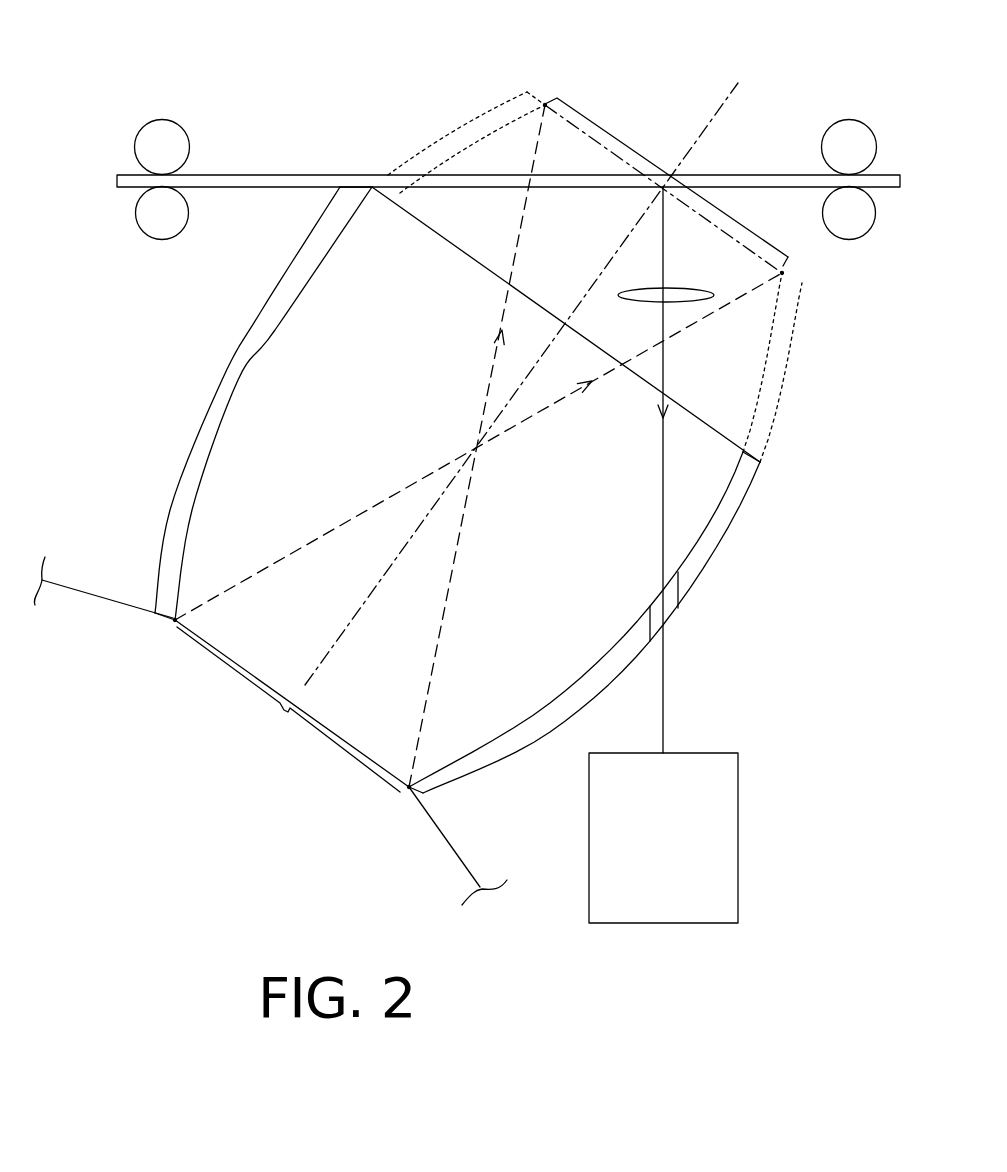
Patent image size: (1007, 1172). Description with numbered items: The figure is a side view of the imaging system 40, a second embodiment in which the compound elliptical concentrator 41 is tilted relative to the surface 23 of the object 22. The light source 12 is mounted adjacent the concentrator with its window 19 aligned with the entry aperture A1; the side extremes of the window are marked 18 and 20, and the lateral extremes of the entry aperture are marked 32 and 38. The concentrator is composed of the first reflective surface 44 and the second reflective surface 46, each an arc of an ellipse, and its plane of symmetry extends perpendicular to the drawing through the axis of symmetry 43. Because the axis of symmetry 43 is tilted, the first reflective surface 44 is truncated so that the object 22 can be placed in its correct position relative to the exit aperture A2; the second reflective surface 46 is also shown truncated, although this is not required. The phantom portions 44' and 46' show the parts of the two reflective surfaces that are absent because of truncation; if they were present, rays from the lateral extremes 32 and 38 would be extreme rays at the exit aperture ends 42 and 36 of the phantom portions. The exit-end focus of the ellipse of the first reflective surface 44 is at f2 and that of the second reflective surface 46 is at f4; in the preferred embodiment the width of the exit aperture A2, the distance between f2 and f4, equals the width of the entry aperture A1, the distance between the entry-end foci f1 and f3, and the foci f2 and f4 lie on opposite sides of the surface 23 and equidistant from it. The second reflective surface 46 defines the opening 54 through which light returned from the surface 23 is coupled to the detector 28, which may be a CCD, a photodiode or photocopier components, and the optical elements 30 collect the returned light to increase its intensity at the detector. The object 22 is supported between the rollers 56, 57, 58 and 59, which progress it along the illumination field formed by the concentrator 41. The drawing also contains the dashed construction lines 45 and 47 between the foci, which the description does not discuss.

The light source 12 is at (130, 608).
The side extreme of the window 18 is at (172, 622).
The window 19 is at (297, 682).
The side extreme of the window 20 is at (408, 790).
The object 22 is at (345, 177).
The surface of the object 23 is at (340, 188).
The detector 28 is at (693, 848).
The optical elements 30 is at (668, 292).
The lateral extreme of the entry aperture 32 is at (425, 795).
The exit aperture end of the phantom portion 36 is at (790, 280).
The lateral extreme of the entry aperture 38 is at (160, 580).
The imaging system 40 is at (235, 338).
The compound elliptical concentrator 41 is at (733, 528).
The exit aperture end of the phantom portion 42 is at (520, 103).
The axis of symmetry 43 is at (393, 570).
The first reflective surface 44 is at (259, 403).
The phantom portion 44' is at (455, 137).
The focal line 45 is at (388, 490).
The second reflective surface 46 is at (583, 619).
The phantom portion 46' is at (806, 367).
The intersection point 47 is at (470, 502).
The opening 54 is at (670, 607).
The roller 56 is at (163, 120).
The roller 57 is at (141, 230).
The roller 58 is at (849, 120).
The roller 59 is at (850, 240).
The entry-end focus f1 is at (411, 785).
The exit end focus f2 is at (782, 274).
The entry-end focus f3 is at (176, 618).
The exit end focus f4 is at (545, 106).
The entry aperture A1 is at (288, 709).
The exit aperture A2 is at (675, 175).